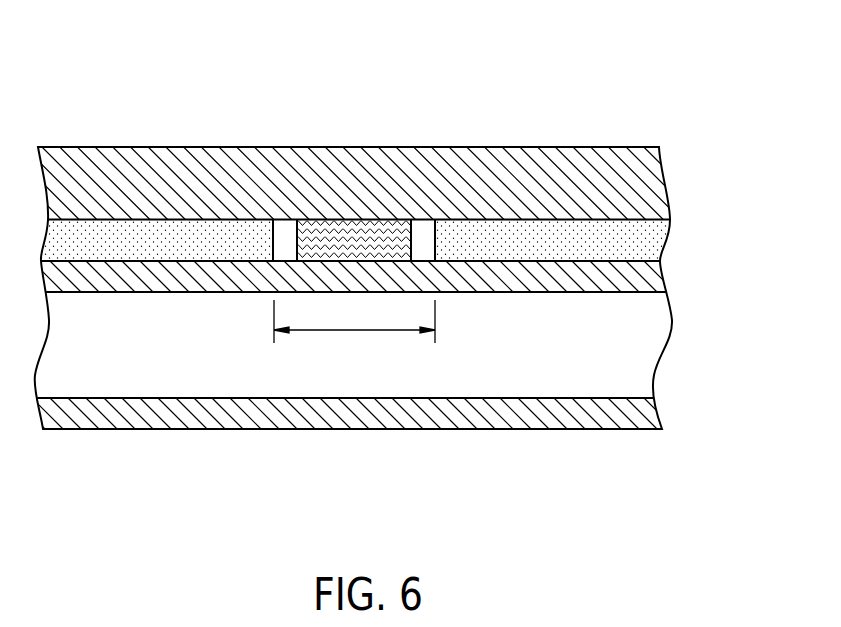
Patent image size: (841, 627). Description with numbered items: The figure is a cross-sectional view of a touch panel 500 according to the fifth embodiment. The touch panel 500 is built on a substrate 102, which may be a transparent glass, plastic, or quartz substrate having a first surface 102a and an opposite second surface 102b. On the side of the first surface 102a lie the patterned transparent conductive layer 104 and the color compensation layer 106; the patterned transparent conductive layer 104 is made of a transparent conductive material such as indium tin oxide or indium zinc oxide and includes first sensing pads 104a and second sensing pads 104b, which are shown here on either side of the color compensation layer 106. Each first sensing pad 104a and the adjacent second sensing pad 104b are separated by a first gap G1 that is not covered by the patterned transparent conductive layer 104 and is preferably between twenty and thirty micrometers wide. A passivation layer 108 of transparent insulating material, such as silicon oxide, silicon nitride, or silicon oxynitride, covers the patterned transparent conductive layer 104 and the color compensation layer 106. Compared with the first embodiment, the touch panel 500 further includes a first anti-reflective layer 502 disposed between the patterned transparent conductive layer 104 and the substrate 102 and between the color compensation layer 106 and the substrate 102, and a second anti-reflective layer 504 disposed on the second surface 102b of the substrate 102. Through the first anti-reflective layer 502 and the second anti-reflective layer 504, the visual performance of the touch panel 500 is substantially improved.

The touch panel 500 is at (602, 95).
The passivation layer 108 is at (640, 181).
The first anti-reflective layer 502 is at (645, 276).
The color compensation layer 106 is at (353, 238).
The patterned transparent conductive layer 104 is at (353, 351).
The first sensing pads 104a is at (527, 248).
The second sensing pads 104b is at (153, 250).
The first surface 102a is at (660, 282).
The substrate 102 is at (640, 352).
The second surface 102b is at (650, 405).
The second anti-reflective layer 504 is at (642, 418).
The first gap G1 is at (354, 321).